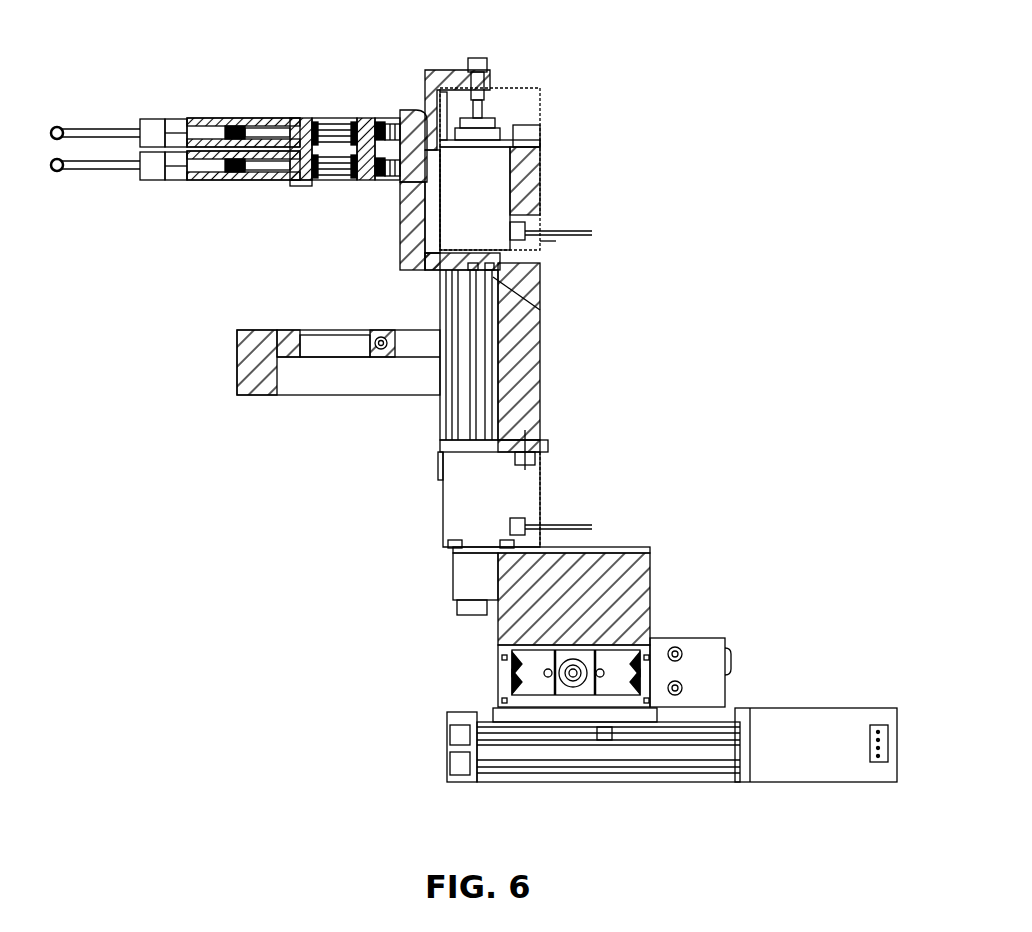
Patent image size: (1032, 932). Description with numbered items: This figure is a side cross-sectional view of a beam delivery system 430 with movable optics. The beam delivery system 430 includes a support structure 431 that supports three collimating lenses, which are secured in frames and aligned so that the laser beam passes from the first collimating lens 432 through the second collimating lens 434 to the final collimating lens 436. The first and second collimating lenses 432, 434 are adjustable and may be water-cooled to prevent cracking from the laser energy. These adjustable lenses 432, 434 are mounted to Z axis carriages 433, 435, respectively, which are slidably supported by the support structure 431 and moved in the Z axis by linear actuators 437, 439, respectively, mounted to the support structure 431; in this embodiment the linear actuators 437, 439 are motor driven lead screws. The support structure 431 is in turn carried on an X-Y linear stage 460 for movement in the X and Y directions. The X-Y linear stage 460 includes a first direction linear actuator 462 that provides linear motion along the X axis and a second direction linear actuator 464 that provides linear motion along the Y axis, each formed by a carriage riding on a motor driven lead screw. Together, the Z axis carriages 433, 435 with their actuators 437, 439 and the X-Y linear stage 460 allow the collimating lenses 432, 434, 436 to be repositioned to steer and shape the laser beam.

The beam delivery system 430 is at (624, 100).
The support structure 431 is at (542, 375).
The first collimating lens 432 is at (325, 100).
The Z axis carriage 433 is at (425, 72).
The second collimating lens 434 is at (306, 212).
The Z axis carriage 435 is at (408, 256).
The final collimating lens 436 is at (308, 312).
The linear actuator 437 is at (495, 178).
The linear actuator 439 is at (443, 511).
The X-Y linear stage 460 is at (410, 793).
The first direction linear actuator 462 is at (728, 612).
The second direction linear actuator 464 is at (823, 680).